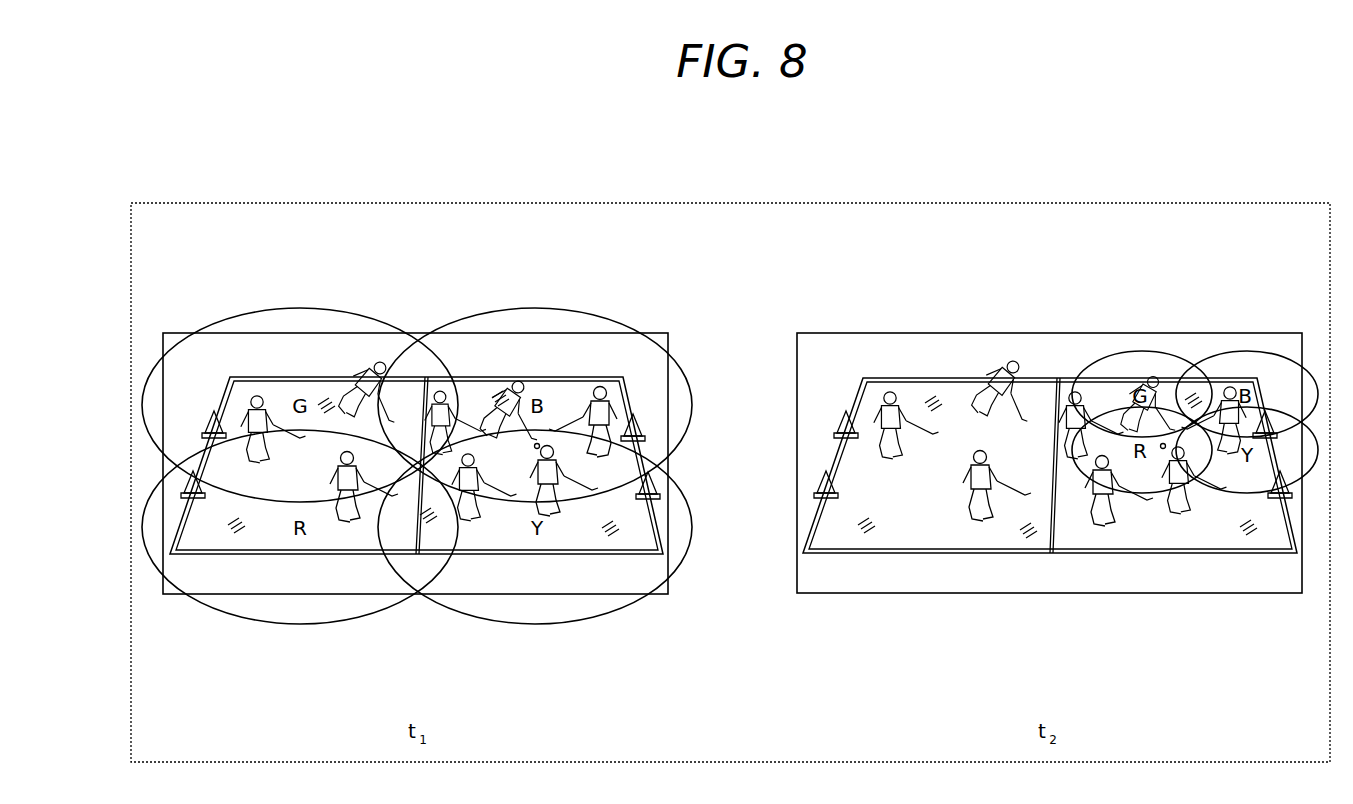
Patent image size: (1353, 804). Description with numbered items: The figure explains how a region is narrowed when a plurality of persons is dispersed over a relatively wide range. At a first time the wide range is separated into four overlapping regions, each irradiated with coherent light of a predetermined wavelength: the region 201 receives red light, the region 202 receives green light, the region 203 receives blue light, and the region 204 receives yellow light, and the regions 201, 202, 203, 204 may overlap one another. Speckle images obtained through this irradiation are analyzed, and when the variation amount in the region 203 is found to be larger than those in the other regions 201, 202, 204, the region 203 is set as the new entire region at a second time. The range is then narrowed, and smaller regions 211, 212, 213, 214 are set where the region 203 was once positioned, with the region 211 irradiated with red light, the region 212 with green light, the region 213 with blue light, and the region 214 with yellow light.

The region 201 is at (300, 624).
The region 202 is at (300, 307).
The region 203 is at (536, 307).
The region 204 is at (536, 624).
The region 211 is at (1135, 493).
The region 212 is at (1142, 352).
The region 213 is at (1247, 352).
The region 214 is at (1245, 493).